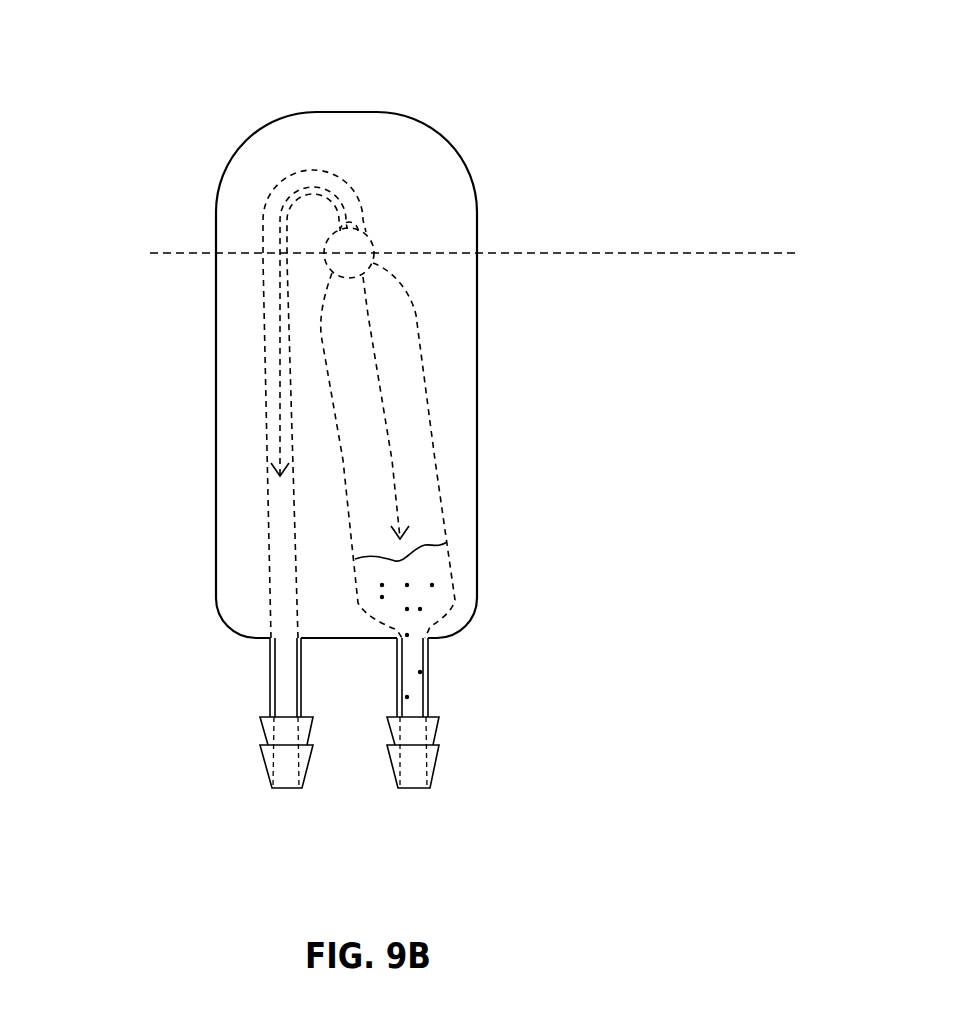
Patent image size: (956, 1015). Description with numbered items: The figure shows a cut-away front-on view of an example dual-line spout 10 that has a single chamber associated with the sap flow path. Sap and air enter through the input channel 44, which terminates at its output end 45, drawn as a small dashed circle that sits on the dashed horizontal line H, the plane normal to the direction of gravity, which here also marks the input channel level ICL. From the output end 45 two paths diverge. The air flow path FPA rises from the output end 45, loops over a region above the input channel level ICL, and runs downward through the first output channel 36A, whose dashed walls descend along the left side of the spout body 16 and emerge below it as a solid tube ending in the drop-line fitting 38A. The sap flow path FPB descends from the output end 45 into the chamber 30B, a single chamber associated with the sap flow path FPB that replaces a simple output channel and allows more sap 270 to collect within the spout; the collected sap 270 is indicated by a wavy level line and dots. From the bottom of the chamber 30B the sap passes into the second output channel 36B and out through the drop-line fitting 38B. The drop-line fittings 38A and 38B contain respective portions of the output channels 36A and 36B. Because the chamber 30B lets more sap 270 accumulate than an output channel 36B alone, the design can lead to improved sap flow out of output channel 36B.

The dual-line spout 10 is at (290, 336).
The container body 16 is at (238, 632).
The input channel 44 is at (378, 241).
The output end of input channel 45 is at (370, 235).
The horizontal line H is at (472, 226).
The input channel level ICL is at (593, 253).
The first output channel 36A is at (265, 378).
The second output channel 36B is at (417, 693).
The drop-line fitting 38A is at (258, 734).
The drop-line fitting 38B is at (452, 755).
The chamber 30B is at (413, 418).
The sap 270 is at (437, 577).
The air flow path FPA is at (277, 295).
The sap flow path FPB is at (375, 362).